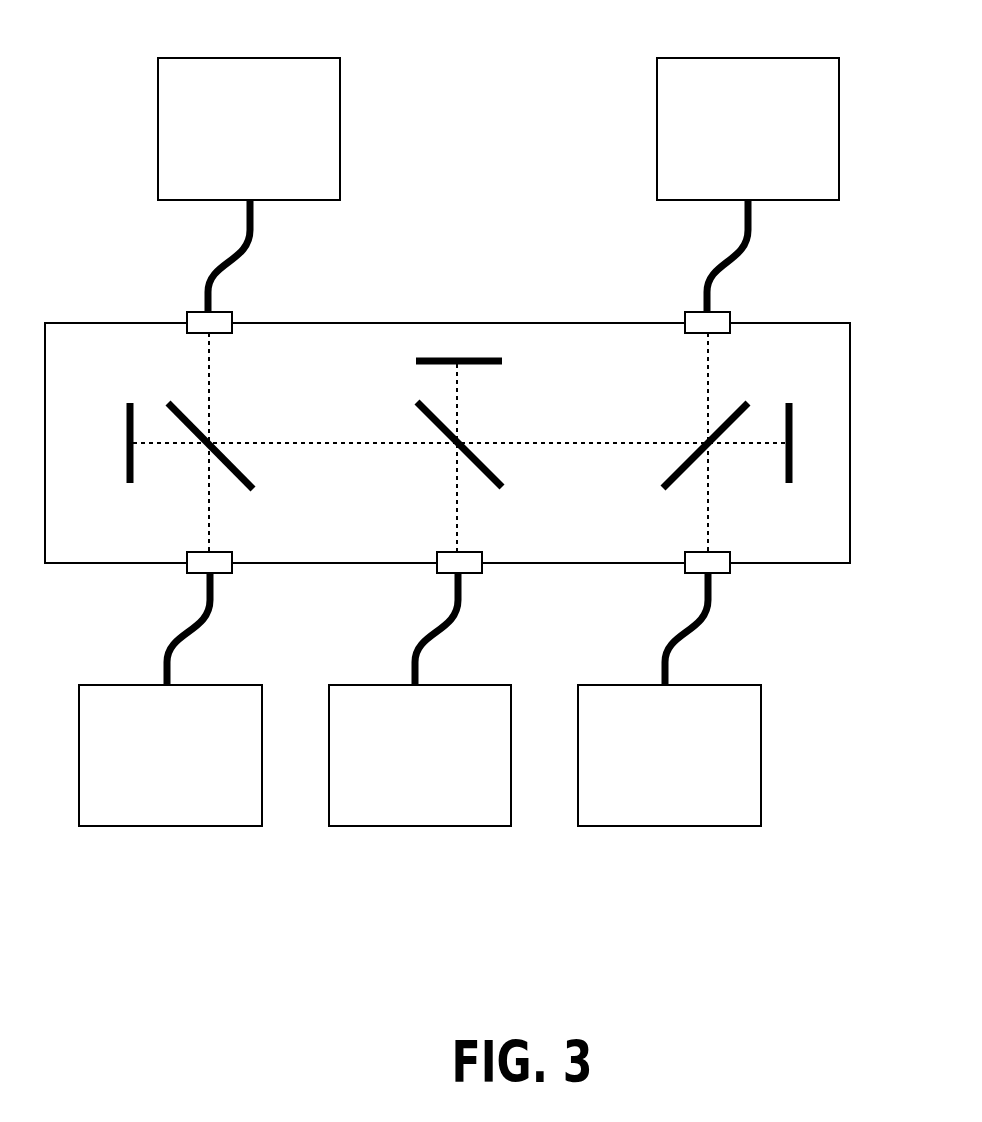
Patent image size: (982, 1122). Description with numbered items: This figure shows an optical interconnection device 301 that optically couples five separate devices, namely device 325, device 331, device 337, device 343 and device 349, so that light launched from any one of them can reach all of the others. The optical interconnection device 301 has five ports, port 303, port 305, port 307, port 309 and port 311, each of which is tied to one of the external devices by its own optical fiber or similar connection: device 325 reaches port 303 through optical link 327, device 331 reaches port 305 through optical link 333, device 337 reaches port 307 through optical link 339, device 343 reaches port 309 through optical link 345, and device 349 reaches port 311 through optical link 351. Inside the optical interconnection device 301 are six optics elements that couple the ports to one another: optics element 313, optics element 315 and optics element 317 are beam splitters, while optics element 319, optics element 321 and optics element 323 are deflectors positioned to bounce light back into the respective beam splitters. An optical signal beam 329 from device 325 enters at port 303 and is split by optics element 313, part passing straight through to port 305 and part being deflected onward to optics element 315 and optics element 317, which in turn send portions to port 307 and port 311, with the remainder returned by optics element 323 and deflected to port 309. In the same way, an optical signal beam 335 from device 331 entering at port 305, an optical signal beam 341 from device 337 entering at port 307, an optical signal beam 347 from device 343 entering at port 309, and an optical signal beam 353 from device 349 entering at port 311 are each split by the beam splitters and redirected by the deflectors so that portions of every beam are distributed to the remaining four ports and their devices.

The optical interconnection device 301 is at (843, 322).
The port 303 is at (190, 313).
The port 305 is at (192, 580).
The port 307 is at (440, 580).
The port 309 is at (690, 580).
The port 311 is at (688, 313).
The optics element 313 is at (253, 490).
The optics element 315 is at (500, 487).
The optics element 317 is at (747, 403).
The optics element 319 is at (127, 487).
The optics element 321 is at (415, 362).
The optics element 323 is at (788, 487).
The device 325 is at (332, 58).
The optical link 327 is at (252, 237).
The optical signal beam 329 is at (205, 355).
The device 331 is at (260, 832).
The optical link 333 is at (183, 642).
The optical signal beam 335 is at (205, 515).
The device 337 is at (510, 832).
The optical link 339 is at (432, 642).
The optical signal beam 341 is at (456, 527).
The device 343 is at (760, 832).
The optical link 345 is at (683, 642).
The optical signal beam 347 is at (707, 525).
The device 349 is at (830, 58).
The optical link 351 is at (752, 237).
The optical signal beam 353 is at (707, 372).